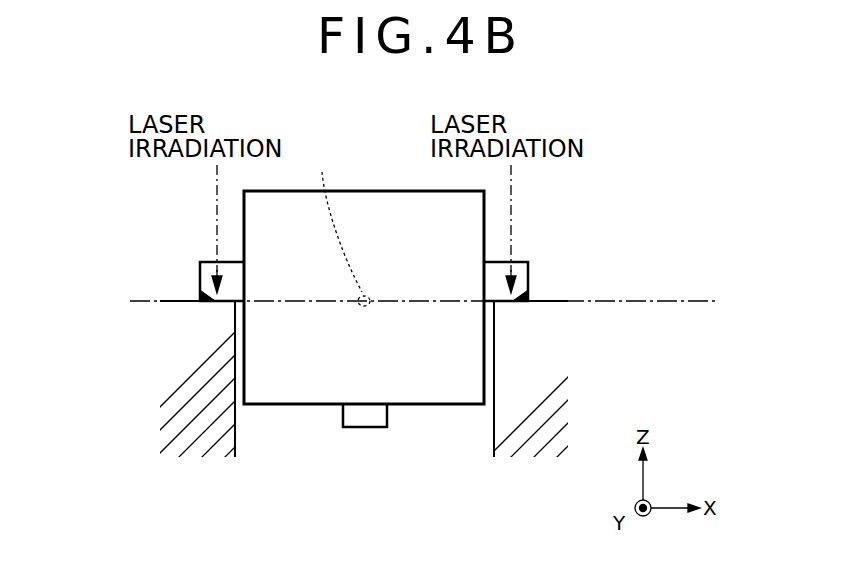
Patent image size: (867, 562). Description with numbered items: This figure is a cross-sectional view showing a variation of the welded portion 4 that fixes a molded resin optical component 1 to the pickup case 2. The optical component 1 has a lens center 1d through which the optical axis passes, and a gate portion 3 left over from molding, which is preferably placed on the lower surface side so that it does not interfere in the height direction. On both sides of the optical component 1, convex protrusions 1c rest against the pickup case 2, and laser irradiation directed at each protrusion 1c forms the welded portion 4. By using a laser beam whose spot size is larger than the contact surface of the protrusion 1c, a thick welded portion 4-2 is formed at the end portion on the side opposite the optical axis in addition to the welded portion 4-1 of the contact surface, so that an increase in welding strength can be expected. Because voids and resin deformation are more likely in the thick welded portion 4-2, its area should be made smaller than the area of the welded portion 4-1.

The optical component 1 is at (385, 224).
The protrusion 1c is at (212, 268).
The lens center 1d is at (340, 226).
The pickup case 2 is at (192, 425).
The gate portion 3 is at (365, 428).
The welded portion 4 is at (212, 308).
The welded portion of the contact surface 4-1 is at (507, 304).
The thick welded portion 4-2 is at (520, 299).